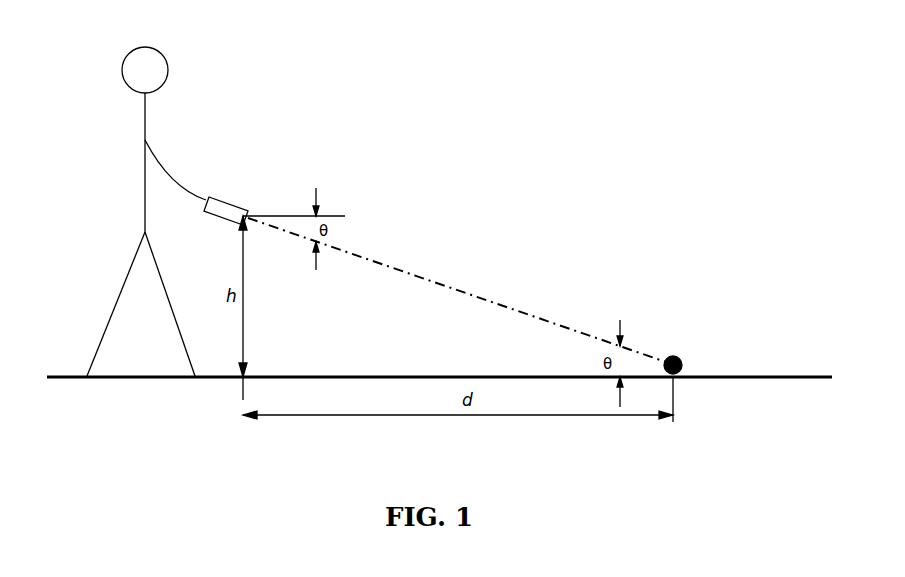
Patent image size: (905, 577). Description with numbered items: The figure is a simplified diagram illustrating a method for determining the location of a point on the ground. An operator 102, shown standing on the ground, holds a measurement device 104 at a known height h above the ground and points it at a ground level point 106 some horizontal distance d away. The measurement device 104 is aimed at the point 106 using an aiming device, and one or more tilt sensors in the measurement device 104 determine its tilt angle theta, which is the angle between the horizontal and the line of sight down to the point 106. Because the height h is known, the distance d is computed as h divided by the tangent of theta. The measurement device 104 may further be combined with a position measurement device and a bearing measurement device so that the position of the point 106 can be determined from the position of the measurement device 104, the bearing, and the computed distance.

The operator 102 is at (125, 58).
The measurement device 104 is at (241, 208).
The ground level point 106 is at (681, 359).